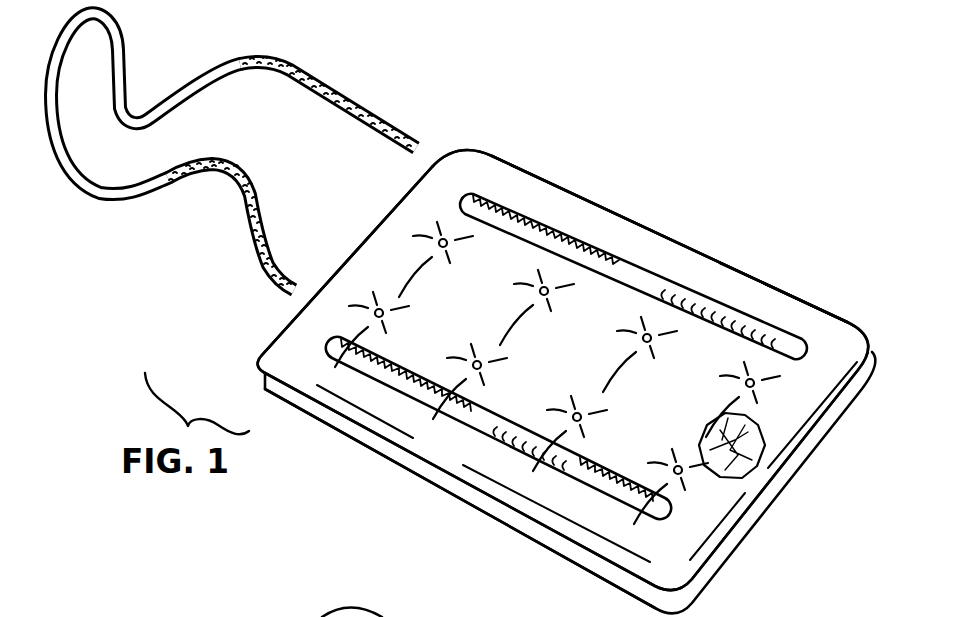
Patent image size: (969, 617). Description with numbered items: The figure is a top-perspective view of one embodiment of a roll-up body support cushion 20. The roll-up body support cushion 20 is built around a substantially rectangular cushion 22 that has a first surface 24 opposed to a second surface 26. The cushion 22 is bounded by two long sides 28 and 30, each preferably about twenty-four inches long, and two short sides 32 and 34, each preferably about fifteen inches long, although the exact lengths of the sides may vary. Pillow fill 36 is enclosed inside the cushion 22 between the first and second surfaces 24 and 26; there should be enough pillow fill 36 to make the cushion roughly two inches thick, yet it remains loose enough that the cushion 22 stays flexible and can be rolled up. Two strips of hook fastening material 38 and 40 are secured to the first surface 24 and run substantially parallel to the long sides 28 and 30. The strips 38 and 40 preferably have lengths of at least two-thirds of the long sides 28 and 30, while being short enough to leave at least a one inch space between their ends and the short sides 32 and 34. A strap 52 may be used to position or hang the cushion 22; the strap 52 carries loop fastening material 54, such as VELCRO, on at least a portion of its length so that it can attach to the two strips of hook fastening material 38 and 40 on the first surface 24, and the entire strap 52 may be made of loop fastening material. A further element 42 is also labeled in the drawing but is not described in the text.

The roll-up body support cushion 20 is at (797, 140).
The cushion 22 is at (558, 171).
The first surface 24 is at (792, 313).
The second surface 26 is at (730, 553).
The long side 28 is at (642, 222).
The long side 30 is at (463, 487).
The short side 32 is at (358, 248).
The short side 34 is at (773, 500).
The pillow fill 36 is at (763, 437).
The strip of hook fastening material 38 is at (472, 192).
The strip of hook fastening material 40 is at (353, 362).
The cord 42 is at (410, 616).
The strap 52 is at (128, 205).
The loop fastening material 54 is at (350, 97).